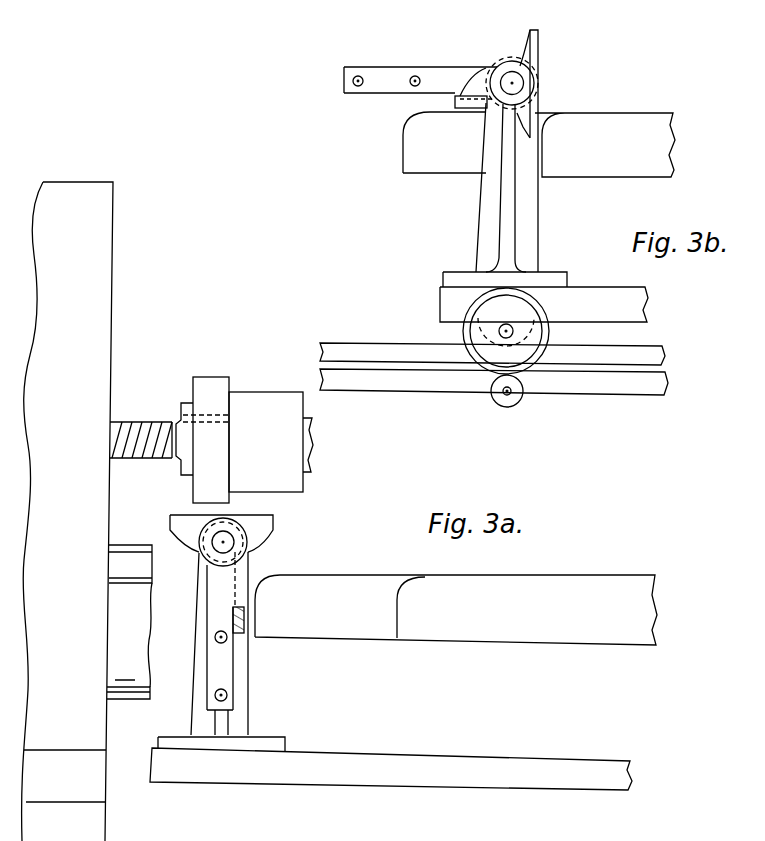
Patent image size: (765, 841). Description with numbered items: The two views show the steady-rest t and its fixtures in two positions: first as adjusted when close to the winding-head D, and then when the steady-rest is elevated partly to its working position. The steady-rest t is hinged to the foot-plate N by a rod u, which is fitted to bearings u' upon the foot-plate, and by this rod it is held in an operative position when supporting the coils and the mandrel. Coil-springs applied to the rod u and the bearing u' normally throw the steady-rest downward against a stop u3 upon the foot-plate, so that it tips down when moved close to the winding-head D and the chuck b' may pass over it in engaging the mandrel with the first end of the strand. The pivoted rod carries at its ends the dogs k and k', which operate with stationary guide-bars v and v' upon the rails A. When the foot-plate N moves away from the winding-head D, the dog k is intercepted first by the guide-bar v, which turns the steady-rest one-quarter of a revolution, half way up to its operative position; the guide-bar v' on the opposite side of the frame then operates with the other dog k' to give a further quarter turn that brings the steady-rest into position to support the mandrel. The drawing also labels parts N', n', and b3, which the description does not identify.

In FIG. 3B, the steady-rest t is at (389, 67).
In FIG. 3A, the steady-rest t is at (207, 662).
In FIG. 3B, the dog k is at (453, 151).
In FIG. 3A, the dog k is at (261, 573).
In FIG. 3A, the dog k' is at (249, 608).
In FIG. 3B, the rod u is at (530, 83).
In FIG. 3A, the rod u is at (207, 548).
In FIG. 3B, the bearings u' is at (501, 68).
In FIG. 3A, the stop u3 is at (242, 633).
In FIG. 3B, the guide-bar v is at (429, 142).
In FIG. 3A, the guide-bar v is at (456, 594).
In FIG. 3B, the guide-bar v' is at (605, 145).
In FIG. 3B, the foot-plate N is at (525, 297).
In FIG. 3A, the foot-plate N is at (391, 758).
In FIG. 3B, the lower guide rail N' is at (494, 383).
In FIG. 3B, the roller n' is at (486, 331).
In FIG. 3A, the winding-head D is at (67, 511).
In FIG. 3A, the rails A is at (132, 552).
In FIG. 3A, the chuck b' is at (211, 422).
In FIG. 3A, the pin b3 is at (212, 413).